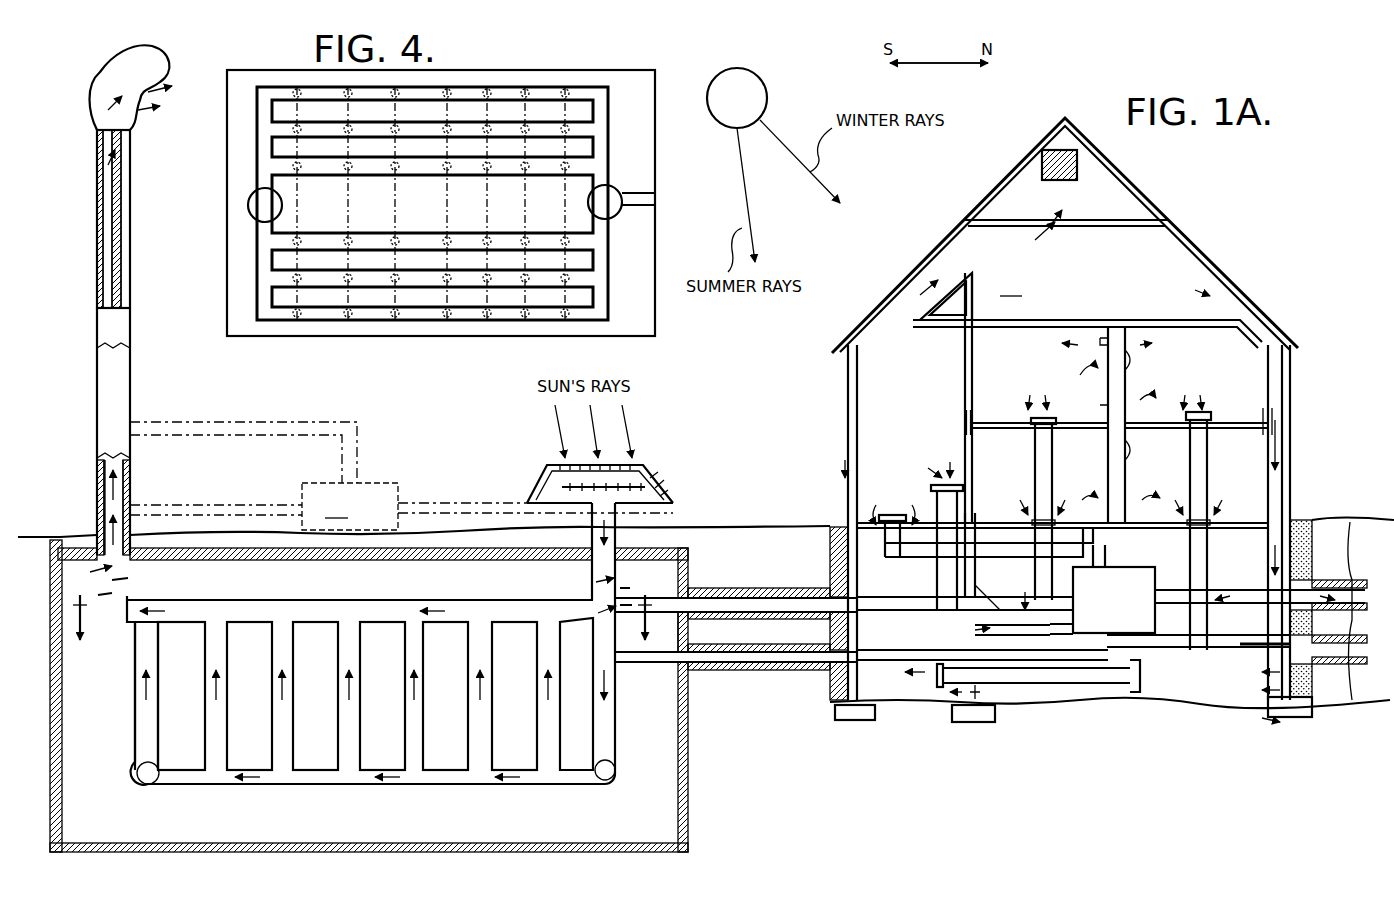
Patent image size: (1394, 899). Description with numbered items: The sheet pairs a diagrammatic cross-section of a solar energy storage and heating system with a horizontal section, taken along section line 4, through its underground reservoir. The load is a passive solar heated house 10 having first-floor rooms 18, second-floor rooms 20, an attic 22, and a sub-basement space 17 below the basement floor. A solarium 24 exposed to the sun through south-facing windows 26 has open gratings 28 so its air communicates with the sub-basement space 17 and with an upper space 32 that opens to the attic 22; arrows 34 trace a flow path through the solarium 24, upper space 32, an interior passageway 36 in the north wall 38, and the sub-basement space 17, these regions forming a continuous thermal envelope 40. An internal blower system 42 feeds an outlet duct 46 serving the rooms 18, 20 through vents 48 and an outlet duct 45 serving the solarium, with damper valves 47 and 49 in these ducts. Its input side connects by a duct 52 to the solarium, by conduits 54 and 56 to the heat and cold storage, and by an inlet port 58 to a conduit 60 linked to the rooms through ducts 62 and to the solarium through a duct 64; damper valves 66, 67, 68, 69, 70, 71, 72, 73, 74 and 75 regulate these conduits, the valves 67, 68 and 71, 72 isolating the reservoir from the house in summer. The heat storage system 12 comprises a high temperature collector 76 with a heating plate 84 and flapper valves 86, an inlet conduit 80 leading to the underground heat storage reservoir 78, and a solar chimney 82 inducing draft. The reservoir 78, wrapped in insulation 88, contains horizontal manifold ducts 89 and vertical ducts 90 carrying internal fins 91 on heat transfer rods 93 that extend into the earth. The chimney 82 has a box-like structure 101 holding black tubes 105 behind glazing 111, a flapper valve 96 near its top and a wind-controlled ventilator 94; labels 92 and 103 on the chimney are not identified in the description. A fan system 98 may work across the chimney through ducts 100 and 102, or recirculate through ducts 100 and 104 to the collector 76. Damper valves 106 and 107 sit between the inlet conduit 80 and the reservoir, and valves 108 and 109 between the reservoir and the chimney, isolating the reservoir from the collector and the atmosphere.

In FIG. 1A, the section line 4 is at (368, 617).
In FIG. 1A, the passive solar heated house 10 is at (1150, 192).
In FIG. 1A, the heat storage system 12 is at (457, 445).
In FIG. 1A, the sub-basement space level 17 is at (1023, 699).
In FIG. 1A, the rooms 18 is at (1008, 504).
In FIG. 1A, the rooms 20 is at (1005, 369).
In FIG. 1A, the attic 22 is at (1108, 204).
In FIG. 1A, the solarium 24 is at (896, 454).
In FIG. 1A, the south facing walls or windows 26 is at (912, 276).
In FIG. 1A, the open flooring or gratings 28 is at (918, 547).
In FIG. 1A, the upper space 32 is at (1087, 310).
In FIG. 1A, the arrows 34 is at (1098, 268).
In FIG. 1A, the interior passageway 36 is at (1290, 366).
In FIG. 1A, the north wall 38 is at (1290, 498).
In FIG. 1A, the thermal envelope 40 is at (1178, 270).
In FIG. 1A, the internal blower system 42 is at (1126, 600).
In FIG. 1A, the outlet duct 45 is at (880, 550).
In FIG. 1A, the outlet duct 46 is at (1126, 480).
In FIG. 1A, the damper valve 47 is at (980, 528).
In FIG. 1A, the vents 48 is at (1128, 350).
In FIG. 1A, the damper valve 49 is at (1110, 556).
In FIG. 1A, the duct 52 is at (938, 574).
In FIG. 4, the conduit 54 is at (652, 192).
In FIG. 1A, the conduit 54 is at (748, 588).
In FIG. 1A, the conduit 56 is at (1332, 590).
In FIG. 1A, the inlet port 58 is at (1095, 630).
In FIG. 1A, the conduit 60 is at (744, 672).
In FIG. 1A, the ducts 62 is at (1036, 458).
In FIG. 1A, the duct 64 is at (1052, 678).
In FIG. 1A, the damper valve 66 is at (989, 589).
In FIG. 1A, the damper valve 67 is at (1021, 587).
In FIG. 1A, the damper valve 68 is at (868, 600).
In FIG. 1A, the damper valve 69 is at (1168, 596).
In FIG. 1A, the damper valve 70 is at (1262, 598).
In FIG. 1A, the damper valve 71 is at (962, 640).
In FIG. 1A, the damper valve 72 is at (875, 658).
In FIG. 1A, the damper valve 73 is at (1170, 668).
In FIG. 1A, the damper valve 74 is at (1272, 640).
In FIG. 1A, the damper valve 75 is at (1156, 670).
In FIG. 1A, the high temperature collector 76 is at (660, 472).
In FIG. 1A, the underground heat storage reservoir 78 is at (432, 594).
In FIG. 4, the inlet conduit 80 is at (588, 205).
In FIG. 1A, the inlet conduit 80 is at (650, 500).
In FIG. 4, the solar chimney 82 is at (248, 205).
In FIG. 1A, the solar chimney 82 is at (134, 252).
In FIG. 1A, the heating plate 84 is at (646, 468).
In FIG. 1A, the flapper valves 86 is at (540, 492).
In FIG. 4, the insulation 88 is at (652, 326).
In FIG. 1A, the insulation 88 is at (678, 800).
In FIG. 4, the horizontal manifold ducts 89 is at (257, 310).
In FIG. 1A, the horizontal manifold ducts 89 is at (198, 624).
In FIG. 4, the vertical ducts 90 is at (388, 138).
In FIG. 1A, the vertical ducts 90 is at (270, 648).
In FIG. 4, the thermally conductive fins 91 is at (555, 128).
In FIG. 1A, the chimney flue 92 is at (97, 486).
In FIG. 4, the heat transfer rods or tubes 93 is at (392, 190).
In FIG. 1A, the wind controlled ventilator 94 is at (88, 82).
In FIG. 1A, the flapper valve 96 is at (126, 156).
In FIG. 1A, the fan system 98 is at (350, 506).
In FIG. 1A, the duct 100 is at (195, 506).
In FIG. 1A, the box-like support 101 is at (124, 184).
In FIG. 1A, the duct 102 is at (226, 422).
In FIG. 1A, the flue liner 103 is at (122, 222).
In FIG. 1A, the duct 104 is at (428, 503).
In FIG. 1A, the black pipes or tubes 105 is at (106, 196).
In FIG. 1A, the damper valve 106 is at (596, 580).
In FIG. 1A, the damper valve 107 is at (620, 588).
In FIG. 1A, the damper valve 108 is at (100, 572).
In FIG. 1A, the flapper valve 109 is at (128, 590).
In FIG. 1A, the glazing 111 is at (97, 224).